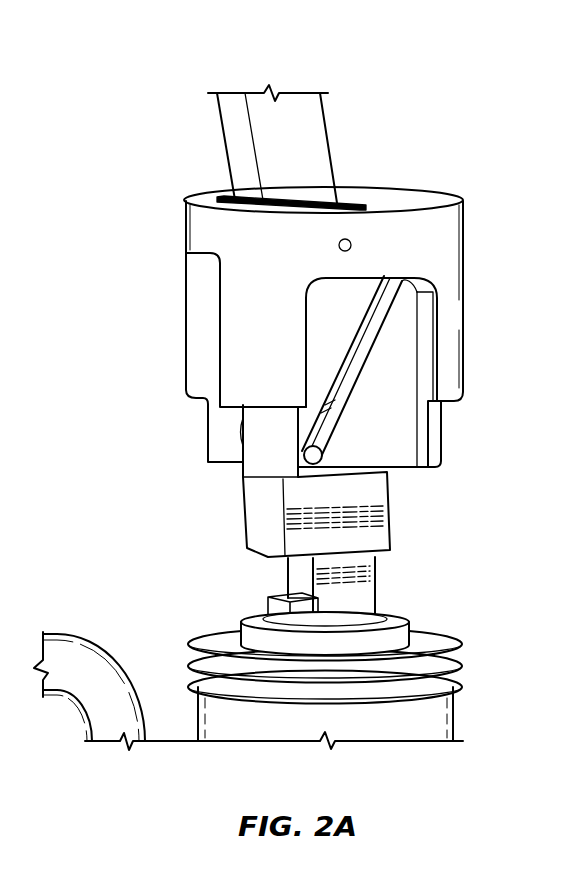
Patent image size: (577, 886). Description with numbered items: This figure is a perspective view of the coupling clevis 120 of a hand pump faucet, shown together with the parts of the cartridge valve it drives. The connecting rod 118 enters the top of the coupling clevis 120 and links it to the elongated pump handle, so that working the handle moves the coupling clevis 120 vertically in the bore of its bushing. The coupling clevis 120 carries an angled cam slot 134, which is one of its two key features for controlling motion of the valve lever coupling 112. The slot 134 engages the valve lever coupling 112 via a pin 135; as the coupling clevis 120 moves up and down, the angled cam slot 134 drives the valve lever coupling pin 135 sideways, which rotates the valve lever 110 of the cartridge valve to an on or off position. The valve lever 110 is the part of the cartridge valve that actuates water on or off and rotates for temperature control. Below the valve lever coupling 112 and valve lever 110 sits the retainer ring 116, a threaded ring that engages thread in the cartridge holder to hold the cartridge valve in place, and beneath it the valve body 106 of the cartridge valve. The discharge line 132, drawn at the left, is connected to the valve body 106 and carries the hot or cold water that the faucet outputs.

The valve body 106 is at (457, 717).
The valve lever 110 is at (383, 580).
The valve lever coupling 112 is at (240, 522).
The retainer ring 116 is at (463, 650).
The connecting rod 118 is at (327, 129).
The coupling clevis 120 is at (463, 293).
The discharge line 132 is at (88, 642).
The angled cam slot 134 is at (372, 350).
The pin 135 is at (322, 458).